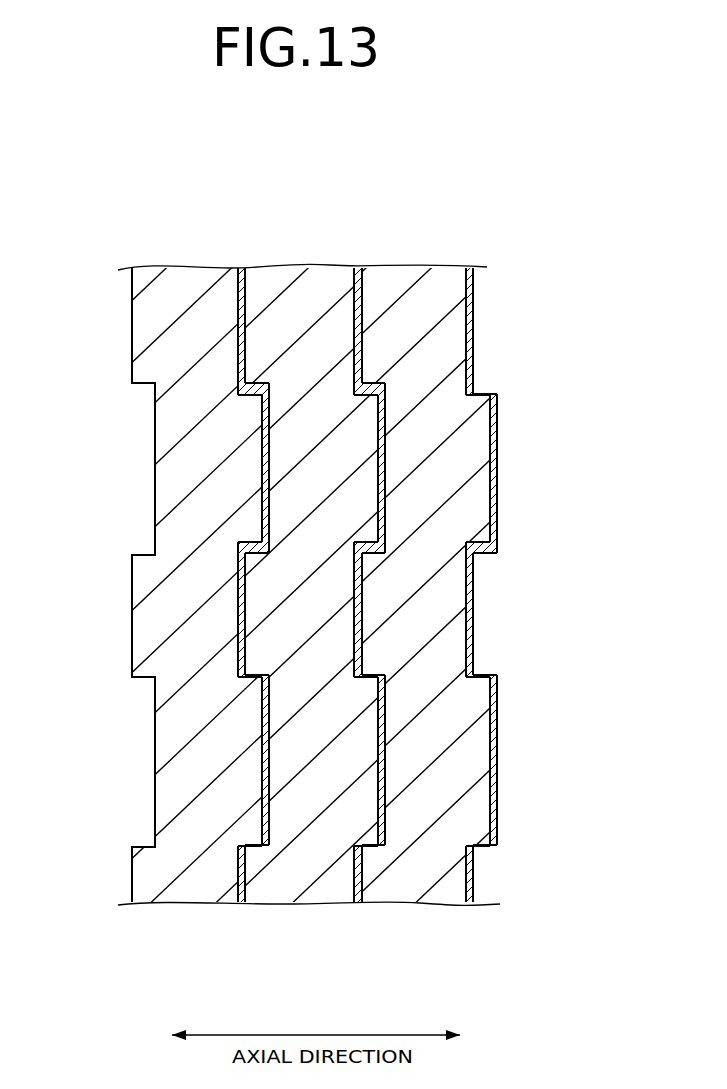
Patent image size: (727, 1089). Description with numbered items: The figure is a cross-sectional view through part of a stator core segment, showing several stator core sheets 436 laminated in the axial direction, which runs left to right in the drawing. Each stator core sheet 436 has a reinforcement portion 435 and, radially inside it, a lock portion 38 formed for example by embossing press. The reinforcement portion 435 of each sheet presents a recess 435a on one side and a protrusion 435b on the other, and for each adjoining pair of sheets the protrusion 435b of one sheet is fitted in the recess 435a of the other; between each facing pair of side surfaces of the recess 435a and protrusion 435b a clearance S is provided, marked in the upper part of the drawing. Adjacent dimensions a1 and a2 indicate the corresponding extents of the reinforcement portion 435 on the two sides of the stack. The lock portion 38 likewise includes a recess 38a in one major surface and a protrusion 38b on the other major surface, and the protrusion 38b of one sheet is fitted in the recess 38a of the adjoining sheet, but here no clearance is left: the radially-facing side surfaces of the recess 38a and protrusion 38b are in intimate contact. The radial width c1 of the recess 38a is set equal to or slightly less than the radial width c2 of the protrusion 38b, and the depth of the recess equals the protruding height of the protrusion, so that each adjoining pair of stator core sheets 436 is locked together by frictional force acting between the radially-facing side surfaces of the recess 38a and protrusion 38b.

The stator core sheet 436 is at (191, 292).
The reinforcement portion 435 is at (309, 585).
The recess of the reinforcement portion 435a is at (149, 555).
The protrusion of the reinforcement portion 435b is at (264, 555).
The lock portion 38 is at (308, 804).
The recess of the lock portion 38a is at (146, 848).
The protrusion of the lock portion 38b is at (265, 848).
The clearance S is at (269, 383).
The axial length a1 is at (97, 383).
The axial length a2 is at (490, 395).
The width of the recess in the radial direction c1 is at (97, 677).
The width of the protrusion in the radial direction c2 is at (490, 676).